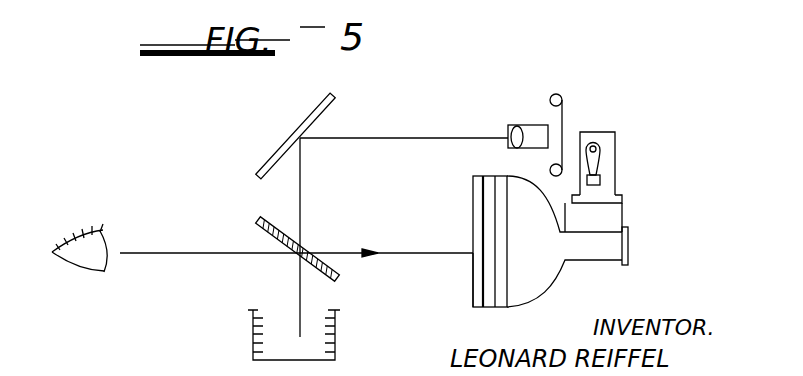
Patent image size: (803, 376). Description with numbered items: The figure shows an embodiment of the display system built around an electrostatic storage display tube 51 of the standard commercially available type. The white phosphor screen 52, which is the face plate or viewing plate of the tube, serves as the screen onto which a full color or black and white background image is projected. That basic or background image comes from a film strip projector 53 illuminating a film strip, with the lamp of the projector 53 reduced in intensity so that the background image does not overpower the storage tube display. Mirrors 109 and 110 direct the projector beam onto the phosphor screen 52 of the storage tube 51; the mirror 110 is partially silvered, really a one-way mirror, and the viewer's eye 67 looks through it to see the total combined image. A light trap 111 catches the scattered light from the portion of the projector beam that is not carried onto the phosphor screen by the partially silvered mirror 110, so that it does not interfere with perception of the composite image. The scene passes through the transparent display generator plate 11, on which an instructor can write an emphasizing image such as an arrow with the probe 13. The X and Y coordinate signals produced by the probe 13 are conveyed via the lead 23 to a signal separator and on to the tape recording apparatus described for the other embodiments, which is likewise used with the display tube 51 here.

The viewer's eye 67 is at (86, 240).
The mirror 109 is at (290, 137).
The partially silvered mirror 110 is at (302, 250).
The light trap 111 is at (335, 345).
The film strip projector 53 is at (607, 148).
The electrostatic storage display tube 51 is at (563, 263).
The probe 13 is at (472, 282).
The transparent plate member 11 is at (477, 297).
The phosphor screen 52 is at (498, 295).
The lead 23 is at (463, 288).